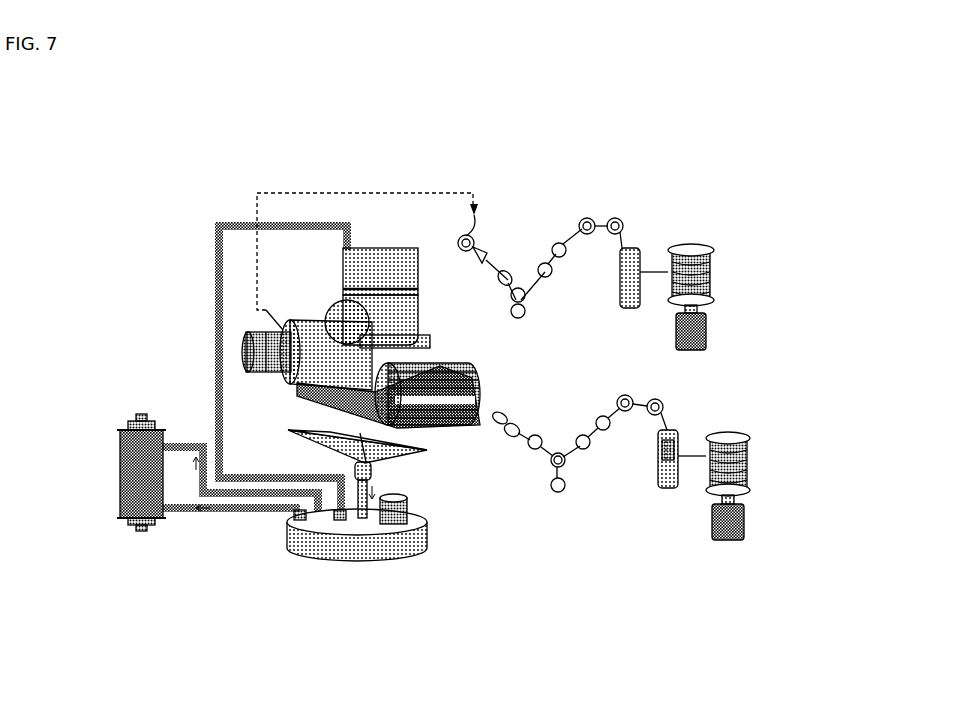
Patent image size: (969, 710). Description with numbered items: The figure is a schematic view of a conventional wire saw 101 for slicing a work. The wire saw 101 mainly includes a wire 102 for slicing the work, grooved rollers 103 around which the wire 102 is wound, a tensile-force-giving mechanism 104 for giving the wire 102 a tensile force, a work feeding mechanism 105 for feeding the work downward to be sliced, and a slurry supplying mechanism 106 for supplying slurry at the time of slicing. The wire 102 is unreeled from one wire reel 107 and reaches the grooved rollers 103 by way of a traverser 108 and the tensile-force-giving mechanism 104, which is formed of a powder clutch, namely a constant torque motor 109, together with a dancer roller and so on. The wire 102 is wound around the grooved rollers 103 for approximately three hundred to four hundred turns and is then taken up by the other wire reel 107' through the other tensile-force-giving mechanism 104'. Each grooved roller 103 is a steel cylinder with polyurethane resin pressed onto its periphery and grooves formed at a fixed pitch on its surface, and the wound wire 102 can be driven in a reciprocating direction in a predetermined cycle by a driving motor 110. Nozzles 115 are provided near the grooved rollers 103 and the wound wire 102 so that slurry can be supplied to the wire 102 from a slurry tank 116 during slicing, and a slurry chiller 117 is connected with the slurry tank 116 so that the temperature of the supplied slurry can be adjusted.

The wire saw 101 is at (150, 211).
The wire 102 is at (488, 393).
The grooved rollers 103 is at (481, 392).
The tensile-force-giving mechanism 104 is at (651, 491).
The tensile-force-giving mechanism 104' is at (659, 258).
The work feeding mechanism 105 is at (395, 226).
The slurry supplying mechanism 106 is at (195, 552).
The wire reel 107 is at (769, 469).
The wire reel 107' is at (764, 292).
The traverser 108 is at (670, 492).
The constant torque motor 109 is at (546, 472).
The driving motor 110 is at (241, 344).
The nozzles 115 is at (419, 337).
The slurry tank 116 is at (338, 547).
The slurry chiller 117 is at (137, 473).